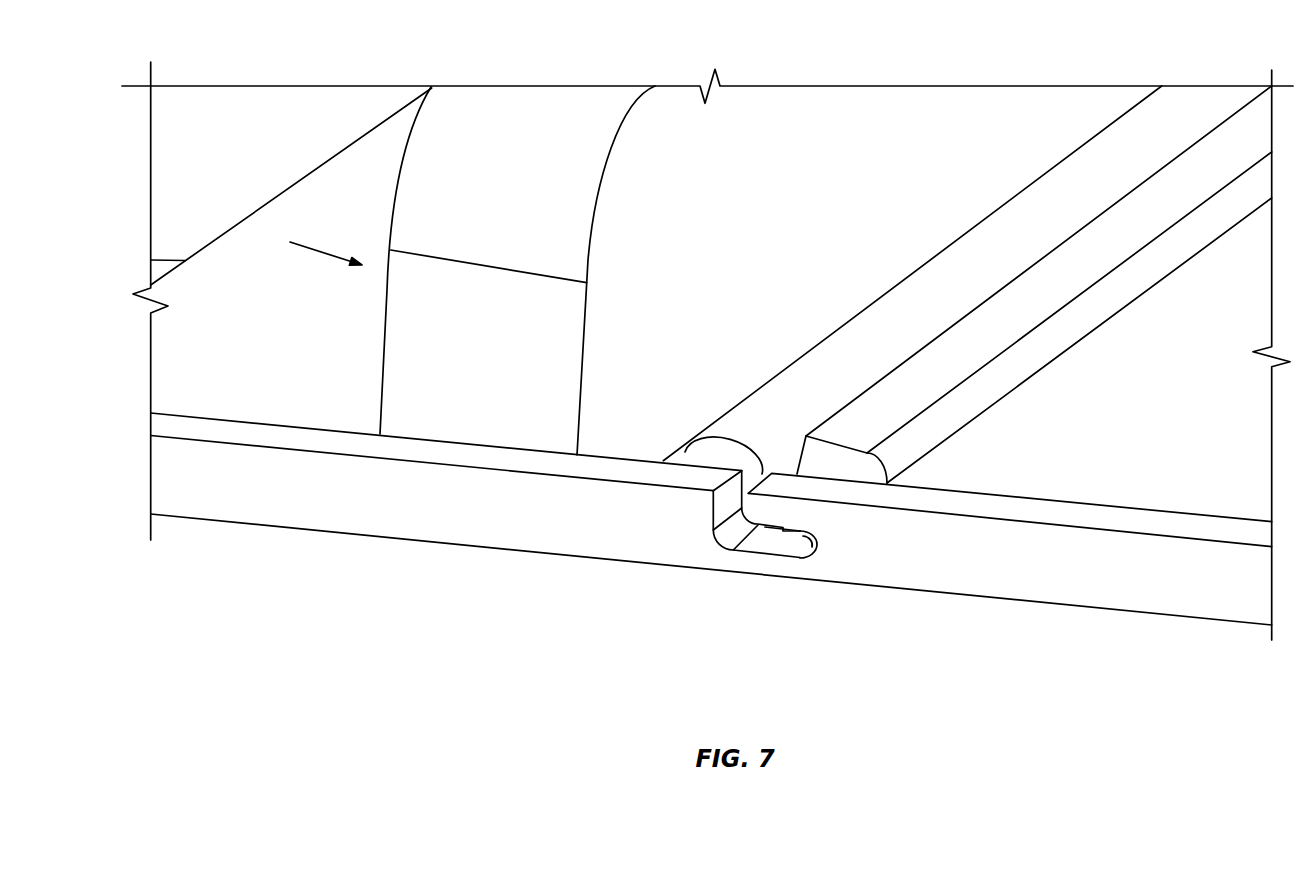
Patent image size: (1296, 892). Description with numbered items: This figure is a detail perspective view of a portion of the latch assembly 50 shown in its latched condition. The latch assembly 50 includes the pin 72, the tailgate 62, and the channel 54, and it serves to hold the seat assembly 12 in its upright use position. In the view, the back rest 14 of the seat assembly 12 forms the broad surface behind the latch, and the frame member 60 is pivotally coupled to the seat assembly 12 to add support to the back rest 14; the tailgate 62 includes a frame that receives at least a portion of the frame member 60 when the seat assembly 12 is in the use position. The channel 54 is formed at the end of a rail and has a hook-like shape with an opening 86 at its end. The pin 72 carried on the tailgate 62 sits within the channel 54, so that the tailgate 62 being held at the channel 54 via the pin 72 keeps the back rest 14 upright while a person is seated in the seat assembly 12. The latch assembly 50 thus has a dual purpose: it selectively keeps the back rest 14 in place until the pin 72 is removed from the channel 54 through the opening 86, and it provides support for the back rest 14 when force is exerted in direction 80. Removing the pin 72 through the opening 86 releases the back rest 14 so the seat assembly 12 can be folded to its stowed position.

The seat assembly 12 is at (356, 420).
The back rest 14 is at (727, 261).
The latch assembly 50 is at (983, 467).
The channel 54 is at (767, 550).
The frame member 60 is at (752, 400).
The tailgate 62 is at (993, 395).
The pin 72 is at (818, 543).
The direction 80 is at (312, 248).
The opening 86 is at (727, 499).